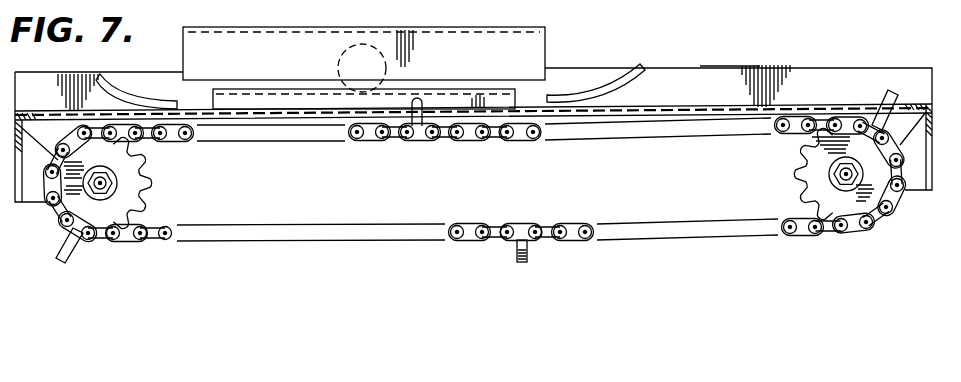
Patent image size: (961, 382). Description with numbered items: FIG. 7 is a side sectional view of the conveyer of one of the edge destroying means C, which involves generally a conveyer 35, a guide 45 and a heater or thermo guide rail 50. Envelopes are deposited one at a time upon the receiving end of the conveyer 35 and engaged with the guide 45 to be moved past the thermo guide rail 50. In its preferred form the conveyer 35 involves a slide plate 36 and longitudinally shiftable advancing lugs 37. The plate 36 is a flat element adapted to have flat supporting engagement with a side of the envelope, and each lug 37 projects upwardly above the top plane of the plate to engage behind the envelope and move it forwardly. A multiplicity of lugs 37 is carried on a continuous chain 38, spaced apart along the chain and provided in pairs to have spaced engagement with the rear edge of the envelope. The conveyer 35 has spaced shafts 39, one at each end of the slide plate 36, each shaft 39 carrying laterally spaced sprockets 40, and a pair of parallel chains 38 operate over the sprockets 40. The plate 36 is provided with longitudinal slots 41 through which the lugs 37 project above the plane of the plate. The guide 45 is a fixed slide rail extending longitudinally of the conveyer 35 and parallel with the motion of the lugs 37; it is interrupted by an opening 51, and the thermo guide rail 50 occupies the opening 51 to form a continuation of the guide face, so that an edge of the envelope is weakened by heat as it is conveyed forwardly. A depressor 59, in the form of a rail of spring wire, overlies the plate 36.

The conveyer 35 is at (550, 254).
The slide plate 36 is at (668, 108).
The advancing lug 37 is at (418, 100).
The chain 38 is at (428, 232).
The shaft 39 is at (106, 183).
The sprocket 40 is at (140, 200).
The longitudinal slot 41 is at (278, 117).
The guide 45 is at (823, 80).
The thermo guide rail 50 is at (480, 92).
The opening 51 is at (240, 97).
The depressor 59 is at (140, 97).
The edge destroying means C is at (733, 63).